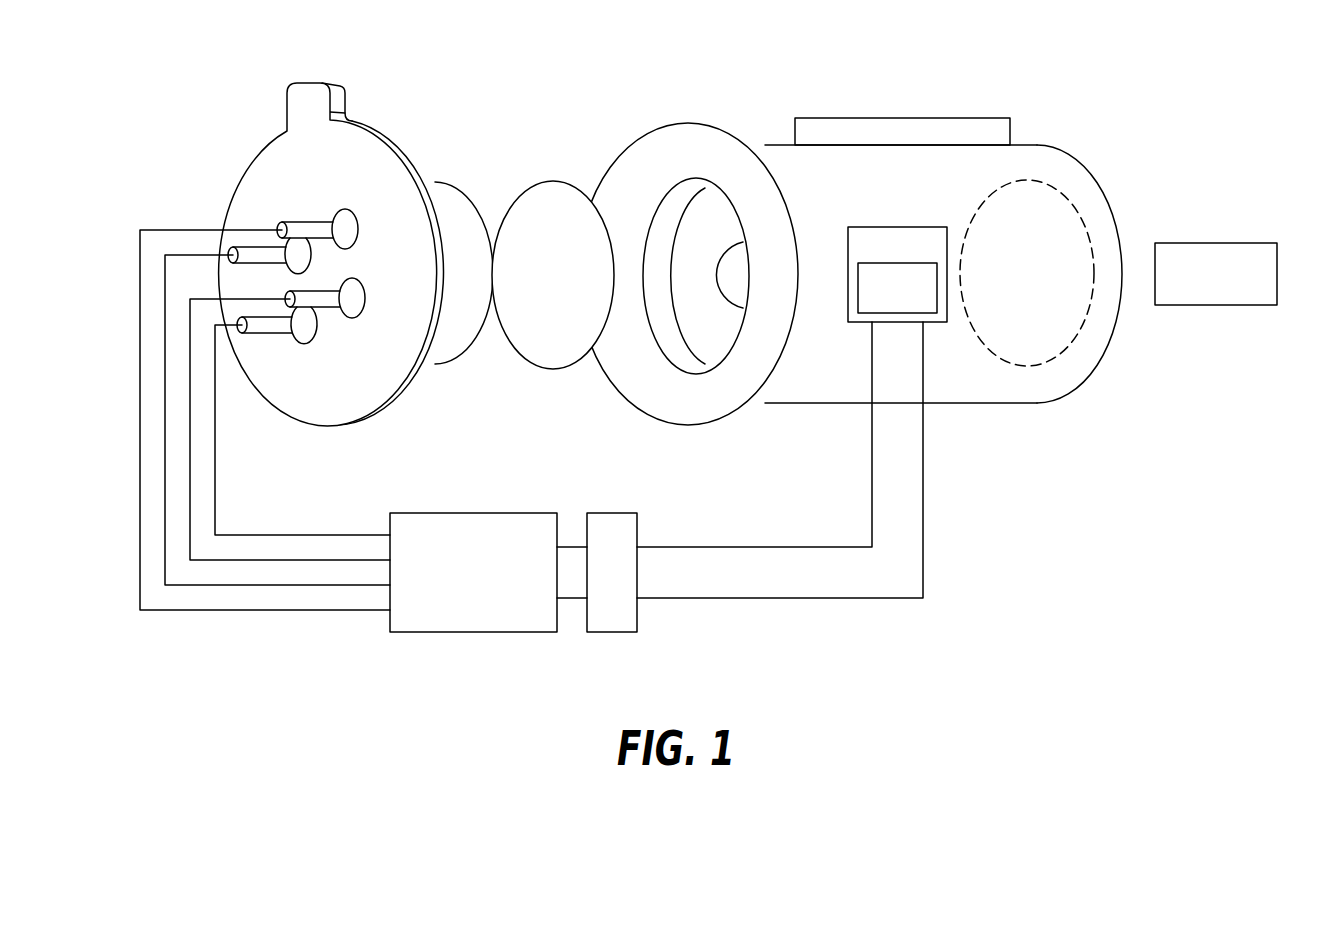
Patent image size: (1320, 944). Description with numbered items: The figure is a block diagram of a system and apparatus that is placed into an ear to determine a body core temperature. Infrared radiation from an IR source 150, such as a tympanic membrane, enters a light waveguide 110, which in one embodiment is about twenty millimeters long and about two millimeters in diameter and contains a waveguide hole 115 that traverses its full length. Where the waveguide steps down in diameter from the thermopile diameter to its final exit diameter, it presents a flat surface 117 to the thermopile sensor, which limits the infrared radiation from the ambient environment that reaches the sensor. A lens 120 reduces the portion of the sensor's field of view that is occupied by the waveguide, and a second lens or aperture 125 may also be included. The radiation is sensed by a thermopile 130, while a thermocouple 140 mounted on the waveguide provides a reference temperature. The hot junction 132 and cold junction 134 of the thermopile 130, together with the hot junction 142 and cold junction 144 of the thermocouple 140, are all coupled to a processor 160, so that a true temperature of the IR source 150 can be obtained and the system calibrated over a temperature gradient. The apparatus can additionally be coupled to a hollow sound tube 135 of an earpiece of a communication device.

The light waveguide 110 is at (850, 408).
The waveguide hole 115 is at (735, 275).
The flat surface 117 is at (698, 225).
The lens 120 is at (527, 187).
The second lens or aperture 125 is at (1070, 205).
The thermopile 130 is at (280, 385).
The hot junction 132 is at (297, 225).
The cold junction 134 is at (310, 300).
The hollow sound tube 135 is at (902, 118).
The thermocouple 140 is at (898, 227).
The hot junction 142 is at (855, 288).
The cold junction 144 is at (612, 513).
The IR source 150 is at (1217, 243).
The processor 160 is at (475, 512).